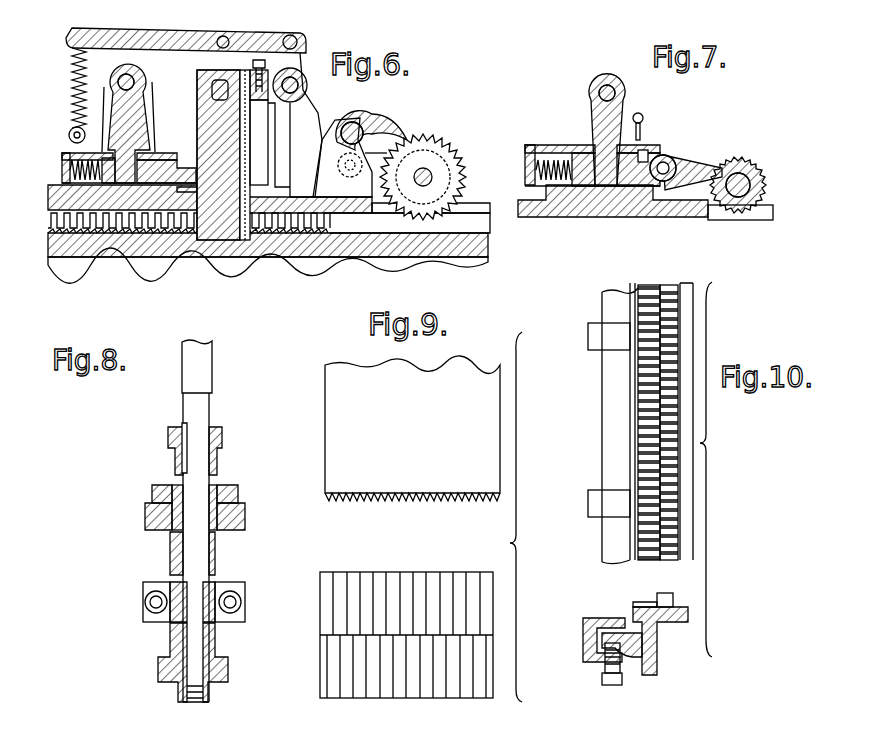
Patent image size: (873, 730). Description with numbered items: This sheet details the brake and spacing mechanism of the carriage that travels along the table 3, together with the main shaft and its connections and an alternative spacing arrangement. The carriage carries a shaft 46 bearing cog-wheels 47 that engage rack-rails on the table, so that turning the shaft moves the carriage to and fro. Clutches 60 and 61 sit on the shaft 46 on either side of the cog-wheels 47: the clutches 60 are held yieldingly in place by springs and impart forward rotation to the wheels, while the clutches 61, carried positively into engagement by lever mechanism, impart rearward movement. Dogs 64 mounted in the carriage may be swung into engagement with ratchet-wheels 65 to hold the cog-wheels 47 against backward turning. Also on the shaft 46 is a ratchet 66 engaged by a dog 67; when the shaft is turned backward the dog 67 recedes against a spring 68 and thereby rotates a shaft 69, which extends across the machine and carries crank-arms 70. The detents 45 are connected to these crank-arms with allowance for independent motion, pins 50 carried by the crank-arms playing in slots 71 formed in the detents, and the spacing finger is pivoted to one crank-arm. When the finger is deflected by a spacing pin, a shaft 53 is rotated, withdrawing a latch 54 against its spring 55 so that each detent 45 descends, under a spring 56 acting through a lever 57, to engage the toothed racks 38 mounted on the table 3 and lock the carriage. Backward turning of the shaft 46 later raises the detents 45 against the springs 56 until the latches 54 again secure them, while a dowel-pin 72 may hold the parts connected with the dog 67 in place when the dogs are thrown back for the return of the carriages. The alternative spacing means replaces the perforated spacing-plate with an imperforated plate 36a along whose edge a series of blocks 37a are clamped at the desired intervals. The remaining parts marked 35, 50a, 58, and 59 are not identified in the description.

In FIG. 6, the table 3 is at (490, 247).
In FIG. 7, the table 3 is at (590, 216).
In FIG. 10, the bar 35 is at (688, 613).
In FIG. 10, the imperforated plate 36a is at (612, 428).
In FIG. 10, the blocks 37a is at (600, 500).
In FIG. 6, the racks 38 is at (245, 236).
In FIG. 10, the racks 38 is at (648, 457).
In FIG. 6, the detent 45 is at (257, 125).
In FIG. 9, the detent 45 is at (393, 466).
In FIG. 6, the shaft 46 is at (432, 170).
In FIG. 7, the shaft 46 is at (750, 182).
In FIG. 8, the shaft 46 is at (205, 640).
In FIG. 8, the cog-wheels 47 is at (245, 510).
In FIG. 6, the pin 50 is at (197, 80).
In FIG. 10, the slide block 50a is at (602, 640).
In FIG. 6, the shaft 53 is at (116, 80).
In FIG. 6, the latch 54 is at (180, 160).
In FIG. 6, the spring 55 is at (64, 158).
In FIG. 6, the spring 56 is at (72, 74).
In FIG. 6, the lever 57 is at (165, 29).
In FIG. 10, the plate 58 is at (648, 602).
In FIG. 6, the rack 59 is at (270, 236).
In FIG. 10, the rack 59 is at (668, 470).
In FIG. 8, the clutches 60 is at (212, 455).
In FIG. 8, the clutches 61 is at (215, 545).
In FIG. 6, the dogs 64 is at (375, 118).
In FIG. 6, the ratchet-wheels 65 is at (430, 143).
In FIG. 8, the ratchet-wheels 65 is at (240, 488).
In FIG. 7, the ratchet 66 is at (742, 165).
In FIG. 6, the dog 67 is at (384, 156).
In FIG. 7, the dog 67 is at (688, 163).
In FIG. 7, the spring 68 is at (545, 148).
In FIG. 6, the shaft 69 is at (308, 87).
In FIG. 7, the shaft 69 is at (625, 92).
In FIG. 6, the crank-arms 70 is at (292, 112).
In FIG. 6, the slots 71 is at (212, 93).
In FIG. 7, the dowel-pin 72 is at (643, 116).